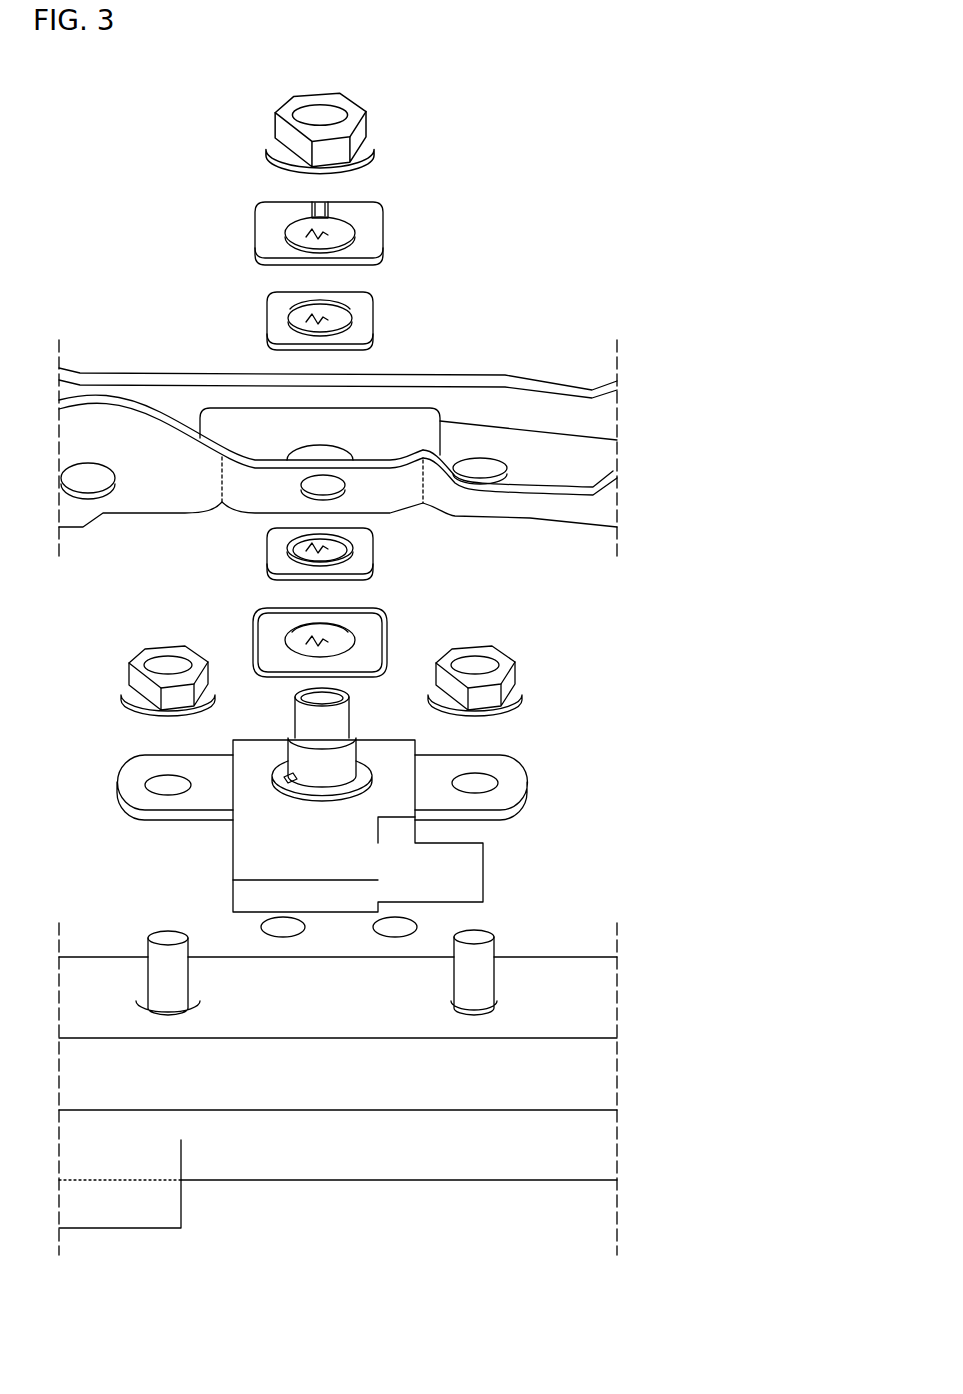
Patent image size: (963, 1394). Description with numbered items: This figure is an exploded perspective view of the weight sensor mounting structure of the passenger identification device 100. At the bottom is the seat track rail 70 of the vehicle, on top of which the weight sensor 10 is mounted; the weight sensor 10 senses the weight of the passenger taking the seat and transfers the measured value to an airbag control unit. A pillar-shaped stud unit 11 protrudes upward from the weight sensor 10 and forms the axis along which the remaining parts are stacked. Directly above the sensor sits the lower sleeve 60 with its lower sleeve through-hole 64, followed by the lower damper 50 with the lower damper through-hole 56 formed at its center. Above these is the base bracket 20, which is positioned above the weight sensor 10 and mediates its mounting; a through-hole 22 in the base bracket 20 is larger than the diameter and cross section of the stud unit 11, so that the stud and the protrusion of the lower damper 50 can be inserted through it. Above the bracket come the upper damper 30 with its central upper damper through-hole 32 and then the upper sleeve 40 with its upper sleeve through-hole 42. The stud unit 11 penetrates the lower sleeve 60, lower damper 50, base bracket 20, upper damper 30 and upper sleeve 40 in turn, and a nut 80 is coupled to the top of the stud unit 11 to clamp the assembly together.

The passenger identification device 100 is at (144, 87).
The nut 80 is at (398, 124).
The upper sleeve 40 is at (337, 233).
The upper sleeve through-hole 42 is at (311, 216).
The upper damper 30 is at (331, 321).
The upper damper through-hole 32 is at (312, 303).
The base bracket 20 is at (399, 448).
The through-hole 22 is at (322, 453).
The lower damper 50 is at (327, 554).
The lower damper through-hole 56 is at (300, 538).
The lower sleeve 60 is at (334, 636).
The lower sleeve through-hole 64 is at (308, 628).
The weight sensor 10 is at (345, 800).
The stud unit 11 is at (302, 722).
The seat track rail 70 is at (558, 918).